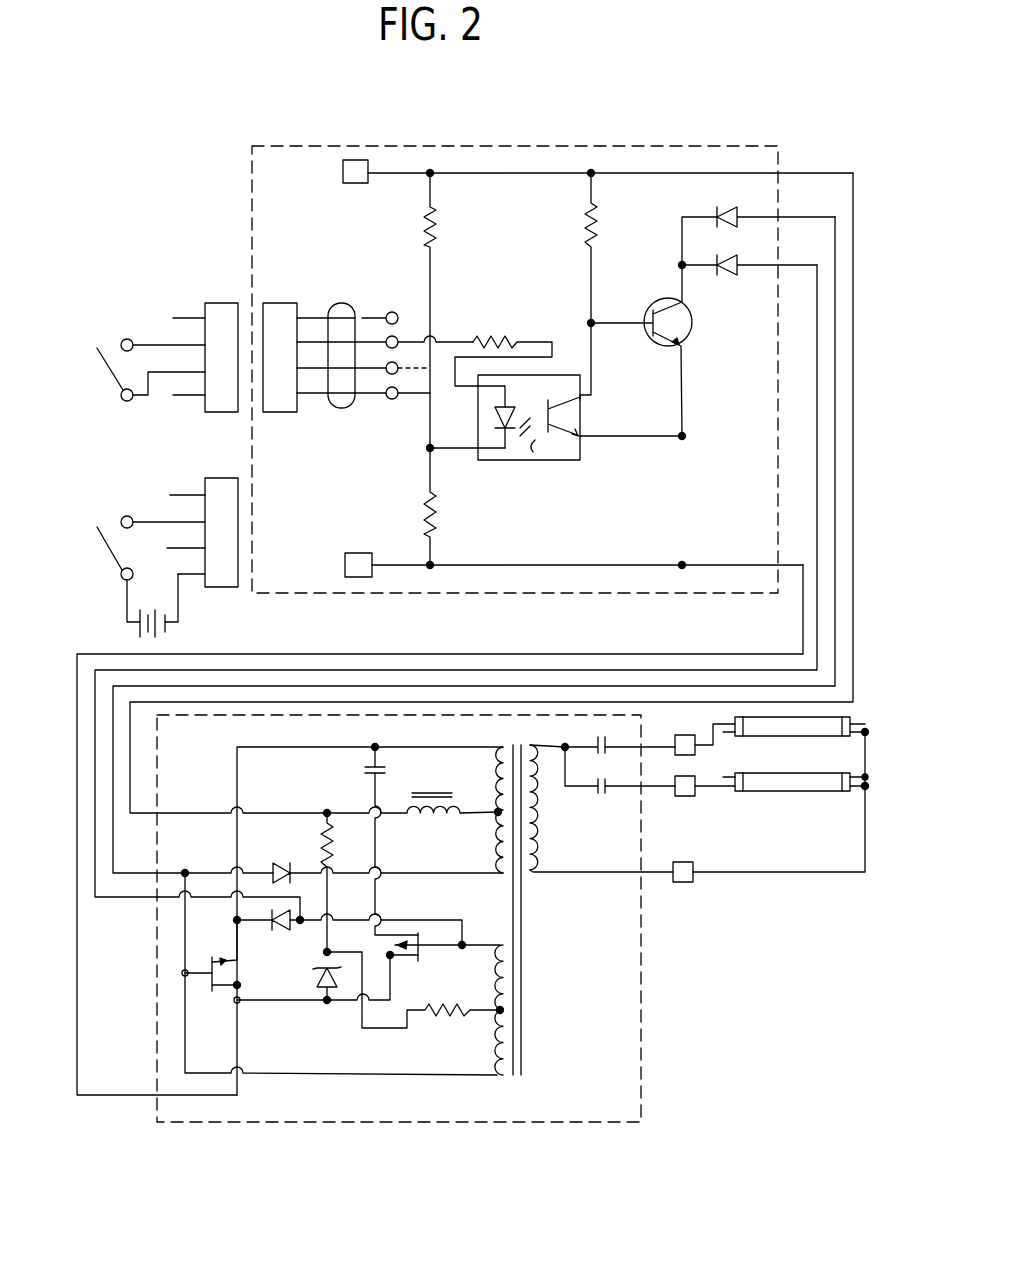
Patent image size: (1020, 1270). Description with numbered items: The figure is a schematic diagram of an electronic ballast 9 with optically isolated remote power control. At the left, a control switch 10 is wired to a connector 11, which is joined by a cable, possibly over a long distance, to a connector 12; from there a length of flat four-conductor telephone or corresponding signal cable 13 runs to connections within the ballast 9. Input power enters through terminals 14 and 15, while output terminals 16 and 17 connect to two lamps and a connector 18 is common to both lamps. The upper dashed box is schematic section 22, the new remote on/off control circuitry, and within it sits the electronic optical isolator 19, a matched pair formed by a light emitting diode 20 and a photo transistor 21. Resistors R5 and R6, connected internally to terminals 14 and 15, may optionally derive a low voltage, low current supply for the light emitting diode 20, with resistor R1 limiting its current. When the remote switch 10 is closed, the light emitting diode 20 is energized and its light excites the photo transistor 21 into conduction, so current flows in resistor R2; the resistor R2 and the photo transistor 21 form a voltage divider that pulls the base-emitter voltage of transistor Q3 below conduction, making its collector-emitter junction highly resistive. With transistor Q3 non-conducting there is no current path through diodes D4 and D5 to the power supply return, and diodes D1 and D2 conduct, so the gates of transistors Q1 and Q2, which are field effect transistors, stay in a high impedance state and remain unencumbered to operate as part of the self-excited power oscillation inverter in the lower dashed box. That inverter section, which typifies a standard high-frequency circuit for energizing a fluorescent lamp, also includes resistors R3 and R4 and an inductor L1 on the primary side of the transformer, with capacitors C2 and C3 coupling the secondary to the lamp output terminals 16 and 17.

The electronic ballast 9 is at (672, 142).
The control switch 10 is at (110, 377).
The connector 11 is at (227, 413).
The connector 12 is at (287, 413).
The signal cable 13 is at (342, 303).
The input power terminal 14 is at (343, 172).
The input power terminal 15 is at (362, 553).
The output terminal 16 is at (690, 733).
The output terminal 17 is at (687, 797).
The common connector 18 is at (687, 884).
The electronic optical isolator 19 is at (528, 462).
The light emitting diode 20 is at (508, 462).
The photo transistor 21 is at (548, 460).
The schematic section 22 is at (465, 144).
The resistor R1 is at (488, 330).
The resistor R2 is at (597, 214).
The resistor R3 is at (333, 858).
The resistor R4 is at (441, 1020).
The resistor R5 is at (437, 216).
The resistor R6 is at (422, 502).
The diode D1 is at (284, 860).
The diode D2 is at (276, 928).
The diode D4 is at (718, 277).
The diode D5 is at (716, 213).
The transistor Q1 is at (208, 962).
The transistor Q2 is at (422, 955).
The transistor Q3 is at (657, 300).
The capacitor C2 is at (598, 740).
The capacitor C3 is at (597, 794).
The inductor L1 is at (430, 792).